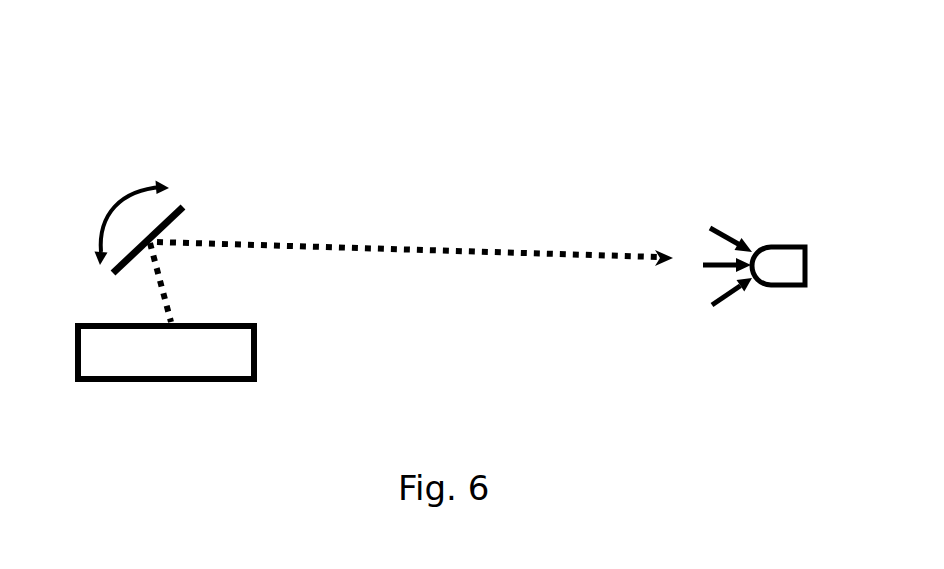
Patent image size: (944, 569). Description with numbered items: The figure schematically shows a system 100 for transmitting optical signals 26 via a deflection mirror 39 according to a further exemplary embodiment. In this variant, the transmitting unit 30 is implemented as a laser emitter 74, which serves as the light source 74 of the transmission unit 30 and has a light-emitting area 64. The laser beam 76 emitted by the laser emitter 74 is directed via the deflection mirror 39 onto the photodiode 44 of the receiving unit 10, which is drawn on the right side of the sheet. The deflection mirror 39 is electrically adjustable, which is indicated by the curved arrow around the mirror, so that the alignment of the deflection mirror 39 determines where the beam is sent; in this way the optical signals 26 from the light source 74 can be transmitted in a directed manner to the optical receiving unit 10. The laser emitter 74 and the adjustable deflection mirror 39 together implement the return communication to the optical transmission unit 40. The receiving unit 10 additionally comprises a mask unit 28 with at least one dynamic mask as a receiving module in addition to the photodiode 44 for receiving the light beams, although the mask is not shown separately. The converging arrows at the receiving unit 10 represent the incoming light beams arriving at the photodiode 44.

The system 100 is at (509, 98).
The deflection mirror 39 is at (174, 206).
The optical transmission unit 40 is at (166, 301).
The transmitting unit 30 is at (166, 355).
The light-emitting area 64 is at (166, 355).
The laser emitter 74 is at (117, 383).
The optical signals 26 is at (415, 217).
The laser beam 76 is at (440, 250).
The receiving unit 10 is at (770, 234).
The photodiode 44 is at (770, 234).
The mask unit 28 is at (772, 246).